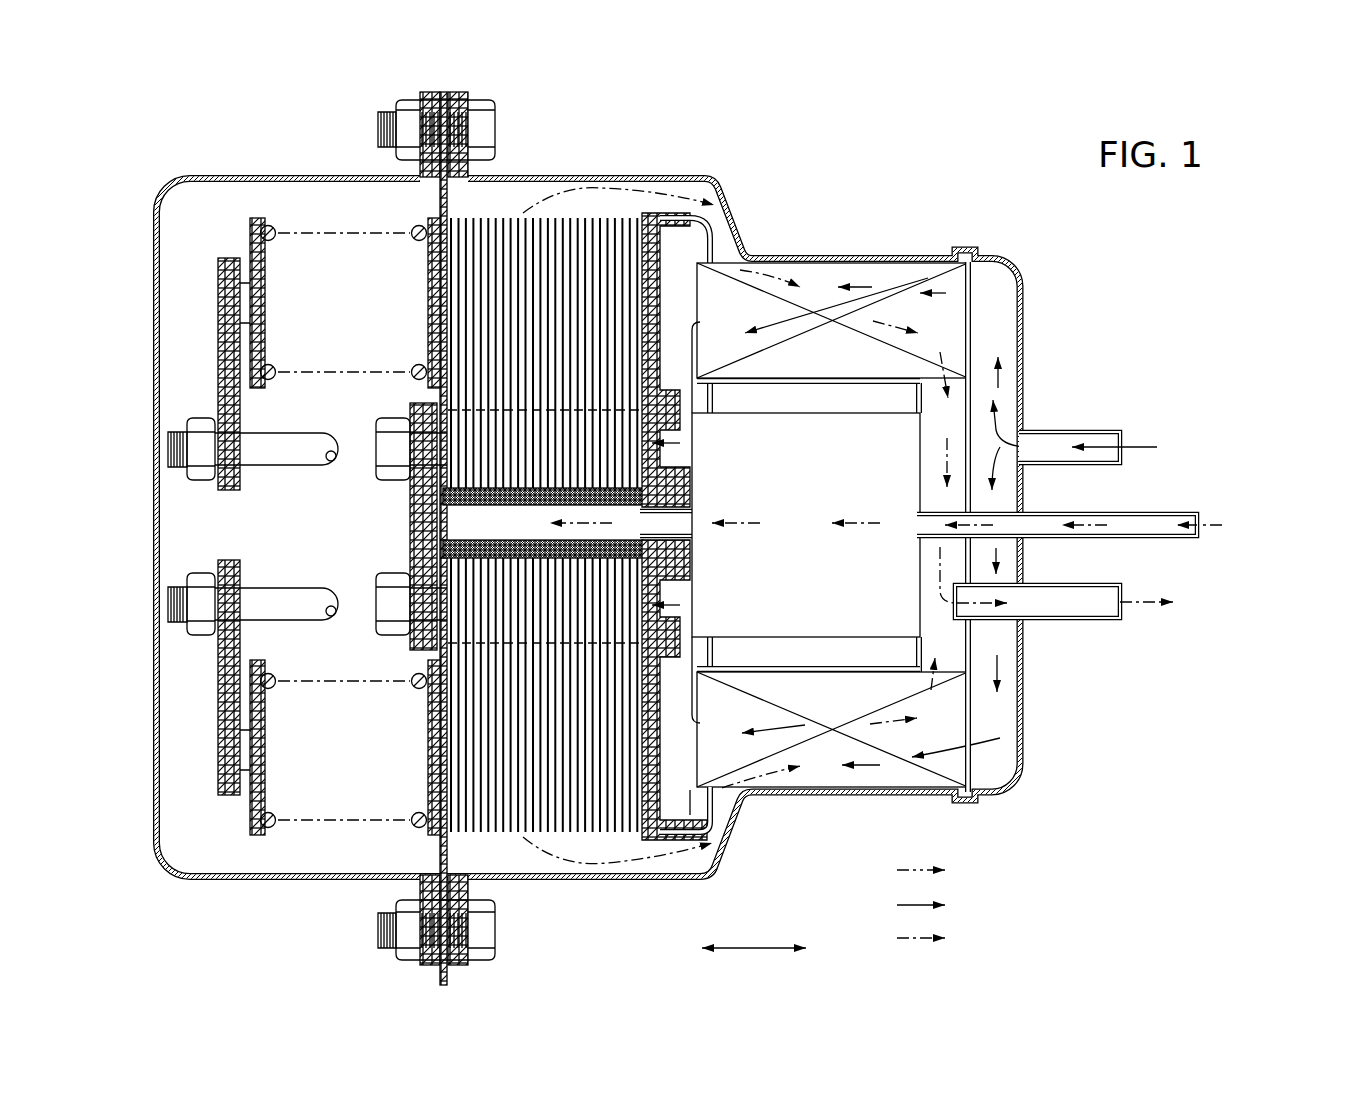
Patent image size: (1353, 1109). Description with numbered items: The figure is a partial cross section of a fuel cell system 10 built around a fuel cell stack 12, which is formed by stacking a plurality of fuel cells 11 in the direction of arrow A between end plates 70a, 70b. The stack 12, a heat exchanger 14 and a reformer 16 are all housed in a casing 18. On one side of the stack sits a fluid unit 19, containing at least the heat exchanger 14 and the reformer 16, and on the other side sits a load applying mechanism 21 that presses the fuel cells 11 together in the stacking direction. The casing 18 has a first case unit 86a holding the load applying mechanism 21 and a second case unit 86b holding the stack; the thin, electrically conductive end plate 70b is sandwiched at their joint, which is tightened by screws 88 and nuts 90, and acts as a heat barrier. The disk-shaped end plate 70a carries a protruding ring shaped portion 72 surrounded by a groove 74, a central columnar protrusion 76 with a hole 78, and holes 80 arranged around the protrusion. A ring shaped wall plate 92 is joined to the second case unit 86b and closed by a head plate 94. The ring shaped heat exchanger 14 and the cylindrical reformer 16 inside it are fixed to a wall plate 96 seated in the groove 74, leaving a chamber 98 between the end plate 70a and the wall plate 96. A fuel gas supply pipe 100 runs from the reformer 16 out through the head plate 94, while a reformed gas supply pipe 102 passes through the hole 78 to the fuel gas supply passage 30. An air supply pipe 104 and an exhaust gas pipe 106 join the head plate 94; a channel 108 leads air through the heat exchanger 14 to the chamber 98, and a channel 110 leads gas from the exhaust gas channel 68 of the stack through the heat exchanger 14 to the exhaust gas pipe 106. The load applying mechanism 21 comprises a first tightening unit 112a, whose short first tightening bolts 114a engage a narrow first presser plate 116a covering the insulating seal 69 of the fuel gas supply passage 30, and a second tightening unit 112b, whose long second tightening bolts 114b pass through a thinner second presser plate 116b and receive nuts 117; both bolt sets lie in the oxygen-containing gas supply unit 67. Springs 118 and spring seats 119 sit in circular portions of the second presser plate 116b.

The fuel cell system 10 is at (1124, 222).
The fuel cell 11 is at (500, 830).
The fuel cell stack 12 is at (606, 200).
The heat exchanger 14 is at (933, 285).
The reformer 16 is at (835, 425).
The casing 18 is at (766, 240).
The fluid unit 19 is at (945, 205).
The load applying mechanism 21 is at (345, 524).
The fuel gas supply passage 30 is at (660, 478).
The oxygen-containing gas supply unit 67 is at (600, 448).
The exhaust gas channel 68 is at (617, 853).
The insulating seal 69 is at (482, 548).
The end plate 70a is at (660, 333).
The end plate 70b is at (441, 848).
The ring shaped portion 72 is at (720, 859).
The groove 74 is at (694, 860).
The columnar protrusion 76 is at (690, 538).
The hole 78 is at (692, 563).
The hole 80 is at (692, 606).
The first case unit 86a is at (252, 176).
The second case unit 86b is at (618, 176).
The screw 88 is at (478, 125).
The nut 90 is at (388, 130).
The wall plate 92 is at (826, 793).
The head plate 94 is at (1023, 716).
The wall plate 96 is at (734, 233).
The chamber 98 is at (713, 814).
The fuel gas supply pipe 100 is at (1160, 513).
The reformed gas supply pipe 102 is at (695, 522).
The air supply pipe 104 is at (1082, 422).
The exhaust gas pipe 106 is at (1078, 621).
The channel 108 is at (968, 330).
The channel 110 is at (867, 723).
The first tightening unit 112a is at (405, 547).
The second tightening unit 112b is at (242, 648).
The first tightening bolt 114a is at (378, 445).
The second tightening bolt 114b is at (170, 448).
The first presser plate 116a is at (420, 500).
The second presser plate 116b is at (220, 362).
The nut 117 is at (205, 580).
The spring 118 is at (268, 830).
The spring seat 119 is at (430, 765).